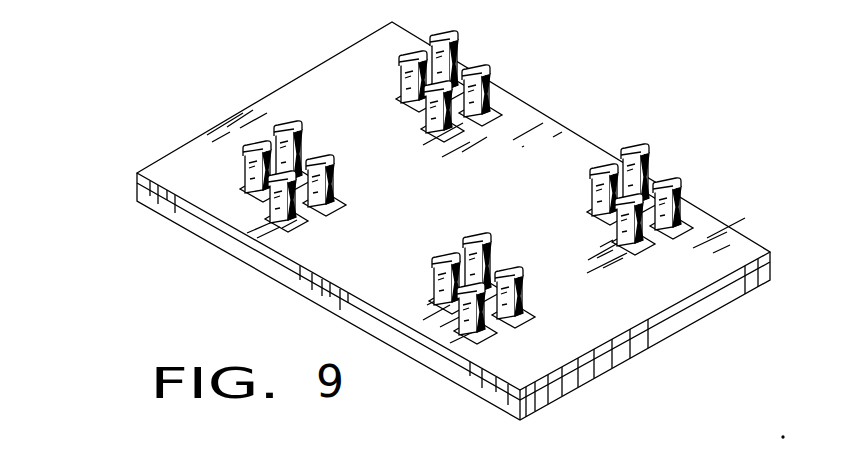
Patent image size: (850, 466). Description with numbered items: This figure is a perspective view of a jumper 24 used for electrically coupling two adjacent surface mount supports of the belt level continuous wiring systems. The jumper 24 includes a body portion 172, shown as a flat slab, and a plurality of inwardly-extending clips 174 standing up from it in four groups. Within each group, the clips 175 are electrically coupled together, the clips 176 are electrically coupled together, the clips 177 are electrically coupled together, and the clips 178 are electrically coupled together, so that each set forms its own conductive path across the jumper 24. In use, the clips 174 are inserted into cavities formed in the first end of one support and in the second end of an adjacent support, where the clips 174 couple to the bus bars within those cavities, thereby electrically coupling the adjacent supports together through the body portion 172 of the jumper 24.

The jumper 24 is at (482, 220).
The body portion 172 is at (655, 288).
The inwardly-extending clips 174 is at (447, 185).
The clips 175 is at (247, 171).
The clips 176 is at (290, 162).
The clips 177 is at (330, 190).
The clips 178 is at (300, 227).